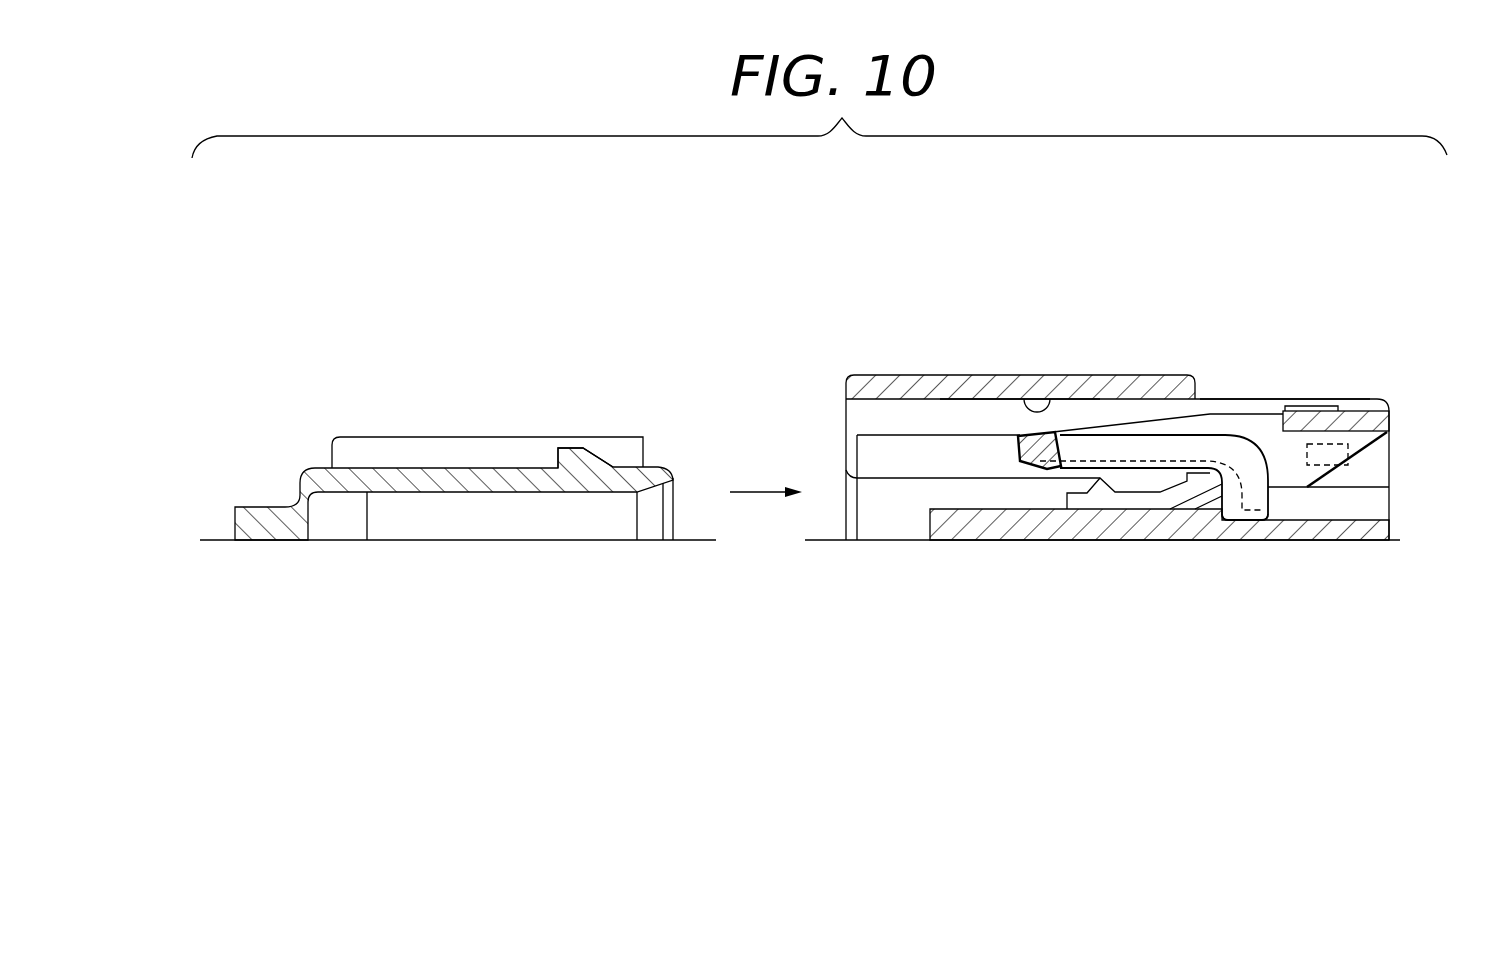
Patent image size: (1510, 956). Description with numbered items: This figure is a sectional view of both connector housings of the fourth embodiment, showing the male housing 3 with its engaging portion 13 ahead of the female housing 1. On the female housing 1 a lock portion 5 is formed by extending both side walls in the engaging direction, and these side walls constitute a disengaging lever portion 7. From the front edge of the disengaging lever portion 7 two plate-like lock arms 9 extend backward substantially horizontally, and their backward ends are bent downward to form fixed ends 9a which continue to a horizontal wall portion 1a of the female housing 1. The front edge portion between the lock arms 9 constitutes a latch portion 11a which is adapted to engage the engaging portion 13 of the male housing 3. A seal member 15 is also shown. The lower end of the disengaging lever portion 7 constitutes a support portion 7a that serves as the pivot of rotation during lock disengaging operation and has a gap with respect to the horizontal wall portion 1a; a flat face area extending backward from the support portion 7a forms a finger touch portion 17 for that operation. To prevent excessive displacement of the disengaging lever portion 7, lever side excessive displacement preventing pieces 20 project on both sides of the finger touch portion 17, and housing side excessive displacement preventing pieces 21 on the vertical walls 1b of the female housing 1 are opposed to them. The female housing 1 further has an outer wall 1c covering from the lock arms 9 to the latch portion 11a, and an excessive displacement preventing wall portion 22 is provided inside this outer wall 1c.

The lock portion 5 is at (919, 244).
The female housing 1 is at (889, 366).
The horizontal wall portion 1a is at (1358, 540).
The vertical wall 1b is at (1258, 402).
The outer wall 1c is at (978, 385).
The excessive displacement preventing wall portion 22 is at (1052, 378).
The lock arm 9 is at (1143, 444).
The fixed end 9a is at (1220, 513).
The latch portion 11a is at (1040, 470).
The disengaging lever portion 7 is at (1217, 430).
The support portion 7a is at (1265, 522).
The seal member 15 is at (1098, 498).
The housing side excessive displacement preventing piece 21 is at (1328, 405).
The finger touch portion 17 is at (1390, 420).
The lever side excessive displacement preventing piece 20 is at (1348, 445).
The male housing 3 is at (313, 451).
The engaging portion 13 is at (558, 463).